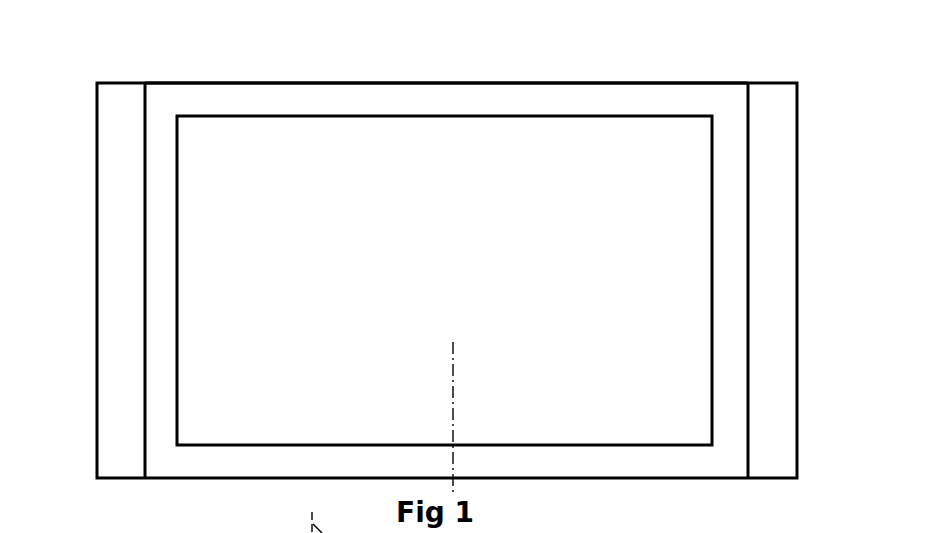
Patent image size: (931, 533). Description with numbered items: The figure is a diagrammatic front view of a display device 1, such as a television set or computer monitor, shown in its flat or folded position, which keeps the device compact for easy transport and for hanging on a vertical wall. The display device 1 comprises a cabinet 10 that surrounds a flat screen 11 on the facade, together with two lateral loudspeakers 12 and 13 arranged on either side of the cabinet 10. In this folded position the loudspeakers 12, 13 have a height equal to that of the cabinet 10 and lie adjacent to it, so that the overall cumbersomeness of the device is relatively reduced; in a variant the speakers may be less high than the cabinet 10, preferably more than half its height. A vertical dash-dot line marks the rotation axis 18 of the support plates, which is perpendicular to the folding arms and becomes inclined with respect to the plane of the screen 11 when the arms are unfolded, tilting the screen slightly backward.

The display device 1 is at (211, 61).
The cabinet 10 is at (473, 97).
The flat screen 11 is at (602, 130).
The lateral loudspeaker 12 is at (112, 345).
The lateral loudspeaker 13 is at (769, 110).
The rotation axis 18 is at (453, 372).